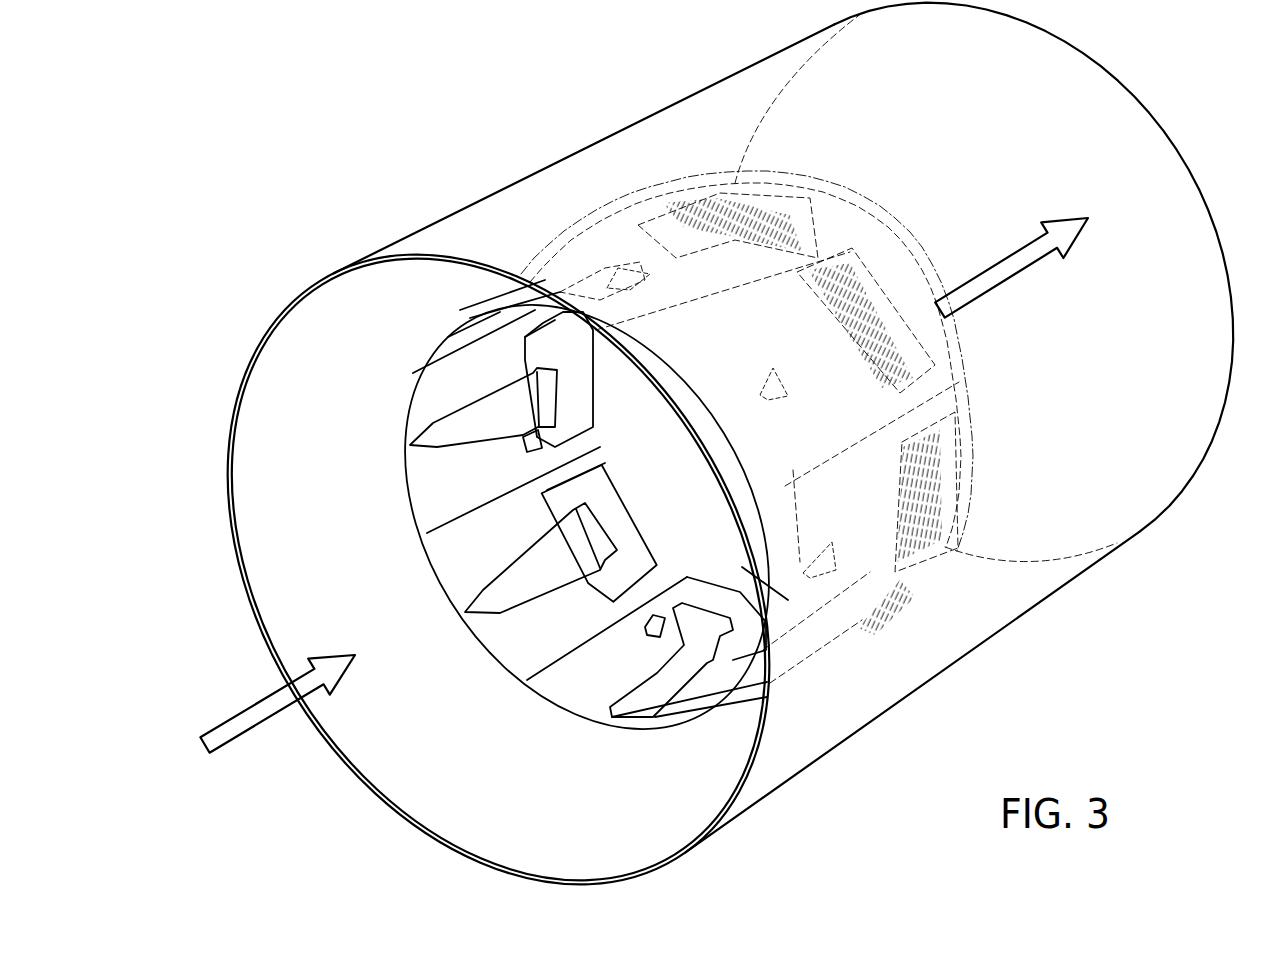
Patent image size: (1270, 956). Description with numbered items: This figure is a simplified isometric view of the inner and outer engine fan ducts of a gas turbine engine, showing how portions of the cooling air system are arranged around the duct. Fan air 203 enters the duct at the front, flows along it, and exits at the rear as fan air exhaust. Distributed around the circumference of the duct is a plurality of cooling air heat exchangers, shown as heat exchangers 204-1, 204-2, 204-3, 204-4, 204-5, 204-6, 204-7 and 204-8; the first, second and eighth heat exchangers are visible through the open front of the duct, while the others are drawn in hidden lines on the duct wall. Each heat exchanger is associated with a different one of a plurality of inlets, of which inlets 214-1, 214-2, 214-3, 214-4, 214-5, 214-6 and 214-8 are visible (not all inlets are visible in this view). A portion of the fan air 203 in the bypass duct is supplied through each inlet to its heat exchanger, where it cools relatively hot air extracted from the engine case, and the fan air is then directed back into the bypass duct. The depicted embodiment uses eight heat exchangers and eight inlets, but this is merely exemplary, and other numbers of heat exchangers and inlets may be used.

The fan air 203 is at (235, 712).
The heat exchanger 204-1 is at (652, 563).
The heat exchanger 204-2 is at (523, 353).
The heat exchanger 204-3 is at (587, 300).
The heat exchanger 204-4 is at (767, 217).
The heat exchanger 204-5 is at (857, 285).
The heat exchanger 204-6 is at (932, 492).
The heat exchanger 204-7 is at (860, 615).
The heat exchanger 204-8 is at (730, 657).
The inlet 214-1 is at (483, 597).
The inlet 214-2 is at (433, 428).
The inlet 214-3 is at (483, 295).
The inlet 214-4 is at (630, 272).
The inlet 214-5 is at (765, 380).
The inlet 214-6 is at (827, 557).
The inlet 214-8 is at (613, 703).